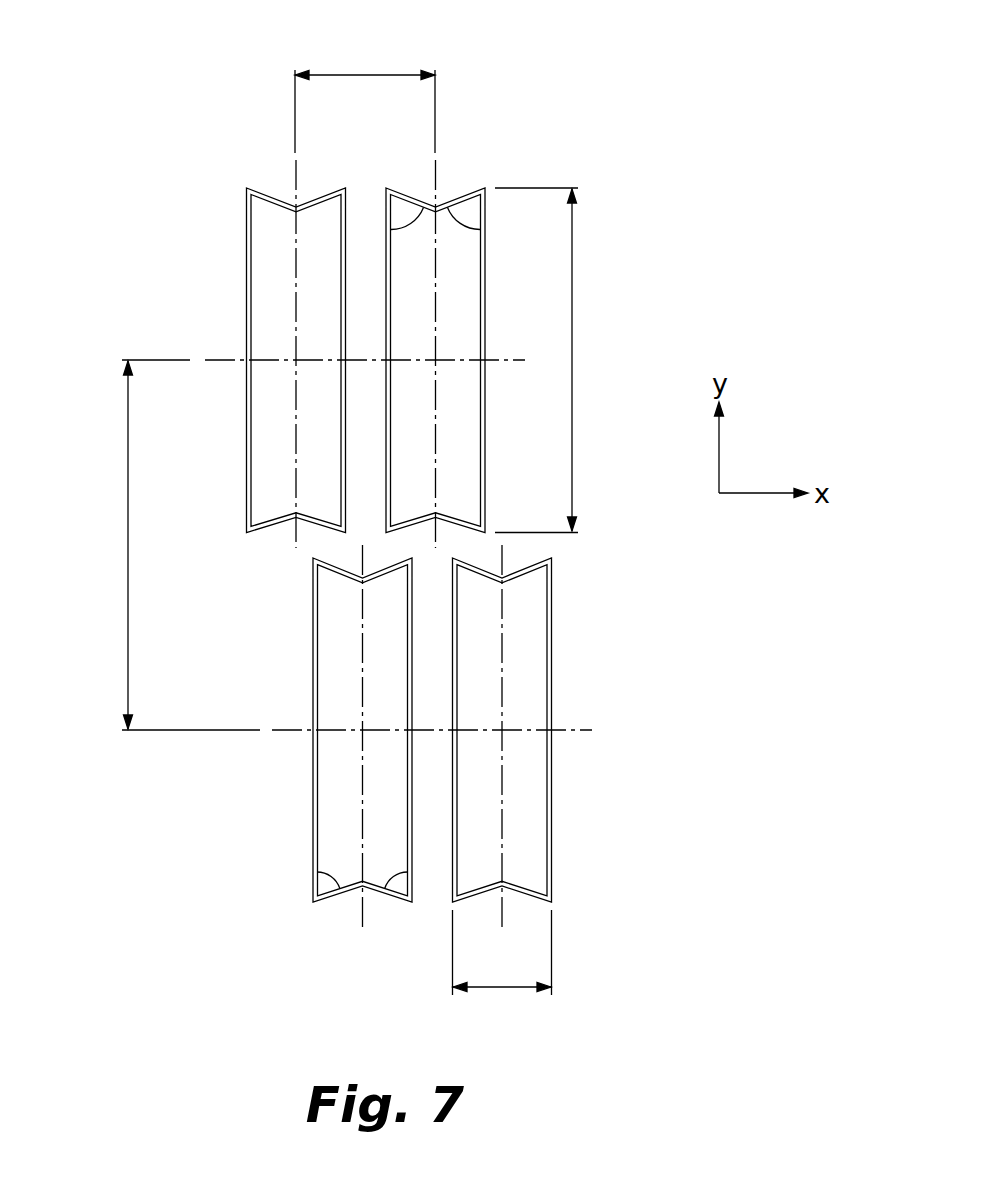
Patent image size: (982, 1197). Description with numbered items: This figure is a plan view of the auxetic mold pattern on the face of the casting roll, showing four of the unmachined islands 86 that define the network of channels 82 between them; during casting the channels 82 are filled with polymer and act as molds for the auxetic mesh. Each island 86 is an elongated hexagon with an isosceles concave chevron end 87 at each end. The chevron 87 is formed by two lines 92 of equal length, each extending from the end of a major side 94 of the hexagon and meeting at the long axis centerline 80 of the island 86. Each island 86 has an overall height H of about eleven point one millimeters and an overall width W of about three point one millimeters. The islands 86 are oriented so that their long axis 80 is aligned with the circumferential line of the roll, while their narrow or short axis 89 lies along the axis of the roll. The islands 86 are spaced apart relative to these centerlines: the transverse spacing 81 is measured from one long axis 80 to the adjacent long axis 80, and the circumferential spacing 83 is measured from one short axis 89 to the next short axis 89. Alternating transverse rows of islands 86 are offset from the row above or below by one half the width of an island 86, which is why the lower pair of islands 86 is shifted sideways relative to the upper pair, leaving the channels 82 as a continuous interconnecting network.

The long axis 80 is at (297, 183).
The transverse spacing of the islands 81 is at (364, 72).
The channels 82 is at (475, 543).
The circumstantial spacing 83 is at (128, 542).
The islands 86 is at (262, 255).
The chevron end 87 is at (281, 173).
The narrow axis 89 is at (233, 358).
The equal length lines 92 is at (377, 883).
The major side 94 is at (403, 883).
The overall height H is at (572, 333).
The overall width W is at (500, 990).